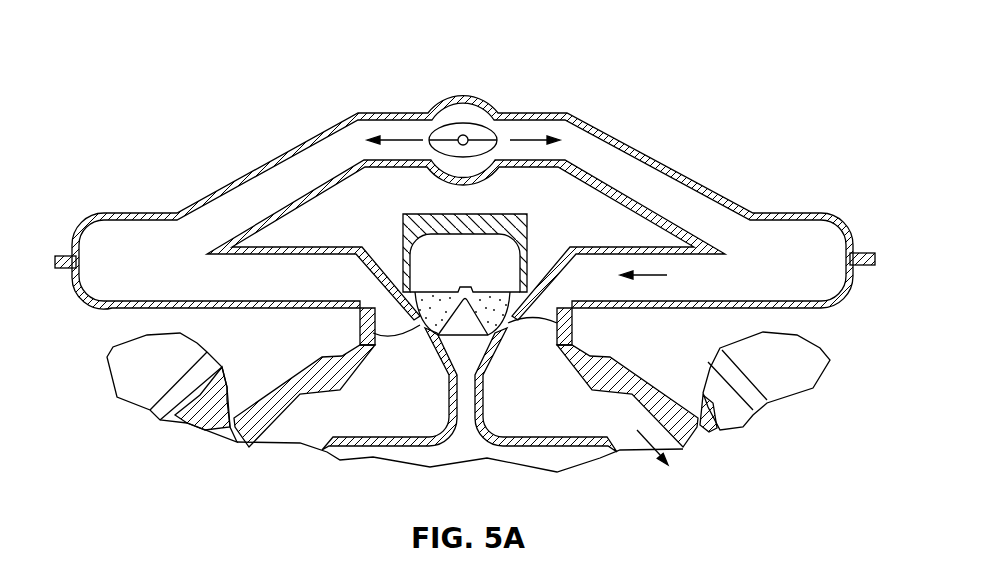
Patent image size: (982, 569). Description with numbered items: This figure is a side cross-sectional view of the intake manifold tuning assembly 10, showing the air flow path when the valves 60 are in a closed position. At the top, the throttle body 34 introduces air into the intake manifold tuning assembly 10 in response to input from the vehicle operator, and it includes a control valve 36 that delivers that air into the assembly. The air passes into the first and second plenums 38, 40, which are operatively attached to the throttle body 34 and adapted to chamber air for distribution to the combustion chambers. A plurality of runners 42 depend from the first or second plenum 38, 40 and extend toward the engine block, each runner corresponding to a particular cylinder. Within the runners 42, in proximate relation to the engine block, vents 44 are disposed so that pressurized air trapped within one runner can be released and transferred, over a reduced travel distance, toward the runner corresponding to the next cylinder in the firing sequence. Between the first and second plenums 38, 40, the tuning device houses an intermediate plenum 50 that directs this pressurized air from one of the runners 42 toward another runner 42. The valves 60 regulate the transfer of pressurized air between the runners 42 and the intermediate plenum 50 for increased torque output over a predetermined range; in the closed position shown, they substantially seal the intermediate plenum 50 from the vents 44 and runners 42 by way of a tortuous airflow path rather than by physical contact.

The intake manifold tuning assembly 10 is at (142, 165).
The throttle body 34 is at (395, 98).
The control valve 36 is at (462, 135).
The first plenum 38 is at (73, 280).
The second plenum 40 is at (848, 283).
The runners 42 is at (140, 310).
The vents 44 is at (368, 320).
The intermediate plenum 50 is at (505, 262).
The valves 60 is at (440, 318).